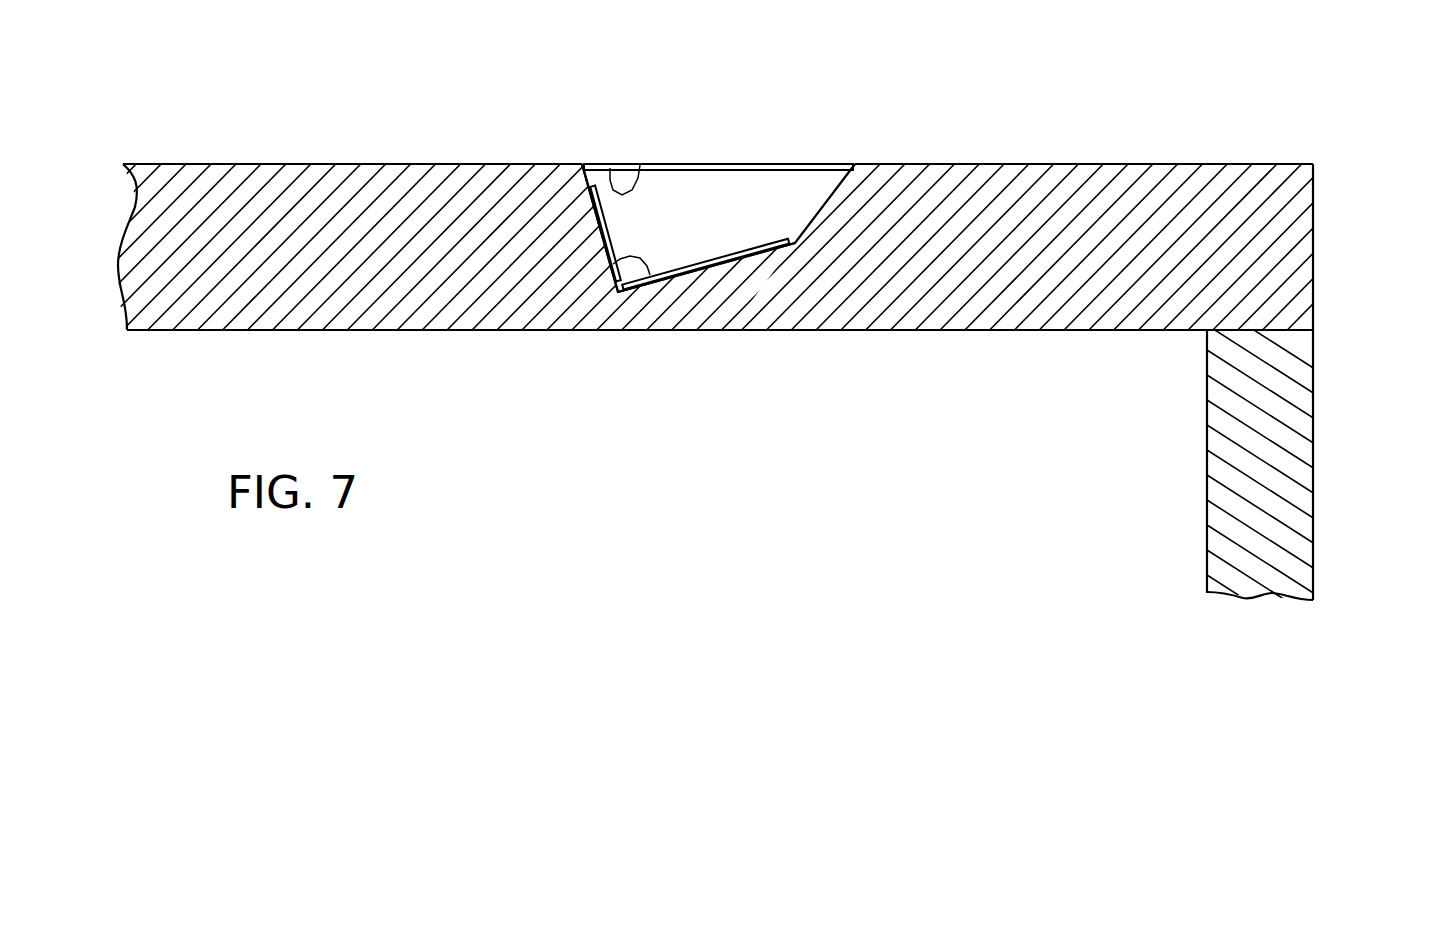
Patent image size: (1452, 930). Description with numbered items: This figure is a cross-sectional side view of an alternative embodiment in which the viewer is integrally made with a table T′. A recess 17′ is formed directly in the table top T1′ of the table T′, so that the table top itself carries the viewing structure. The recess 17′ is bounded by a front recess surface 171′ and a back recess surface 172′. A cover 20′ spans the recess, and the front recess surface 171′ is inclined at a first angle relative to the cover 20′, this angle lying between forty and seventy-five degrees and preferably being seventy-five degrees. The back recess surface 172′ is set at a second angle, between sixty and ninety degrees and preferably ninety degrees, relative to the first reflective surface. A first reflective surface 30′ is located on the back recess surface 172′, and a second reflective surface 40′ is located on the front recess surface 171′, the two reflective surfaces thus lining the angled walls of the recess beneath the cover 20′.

The table T′ is at (1348, 180).
The table top T1′ is at (1022, 163).
The recess 17′ is at (808, 202).
The front recess surface 171′ is at (777, 250).
The back recess surface 172′ is at (599, 165).
The cover 20′ is at (707, 165).
The first reflective surface 30′ is at (596, 240).
The second reflective surface 40′ is at (707, 268).